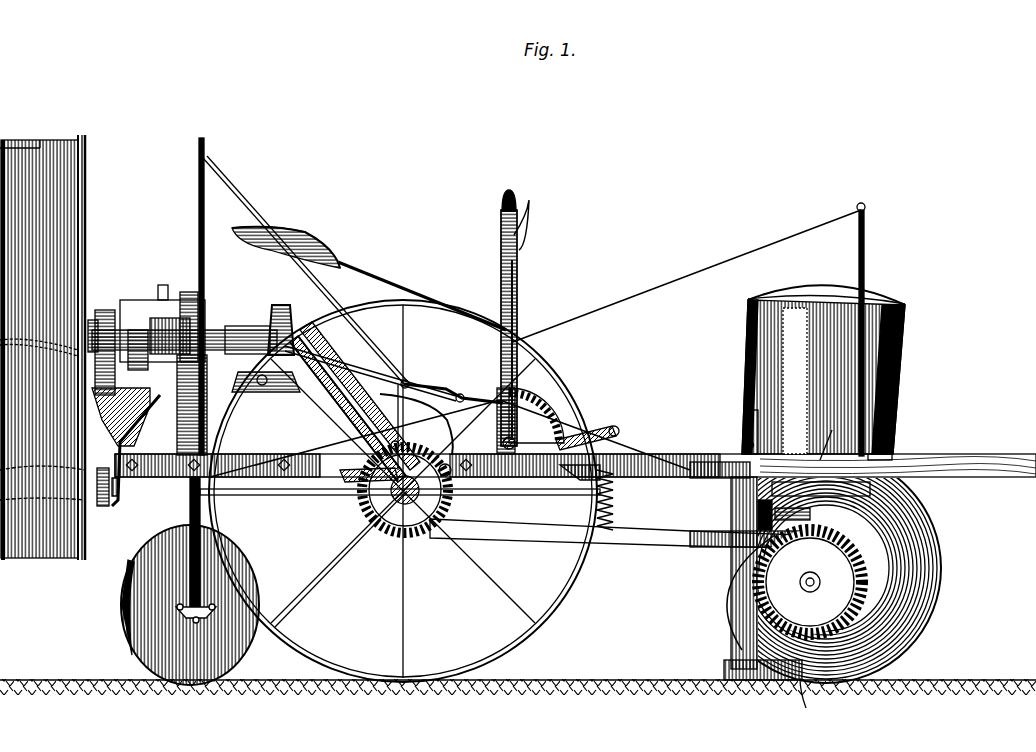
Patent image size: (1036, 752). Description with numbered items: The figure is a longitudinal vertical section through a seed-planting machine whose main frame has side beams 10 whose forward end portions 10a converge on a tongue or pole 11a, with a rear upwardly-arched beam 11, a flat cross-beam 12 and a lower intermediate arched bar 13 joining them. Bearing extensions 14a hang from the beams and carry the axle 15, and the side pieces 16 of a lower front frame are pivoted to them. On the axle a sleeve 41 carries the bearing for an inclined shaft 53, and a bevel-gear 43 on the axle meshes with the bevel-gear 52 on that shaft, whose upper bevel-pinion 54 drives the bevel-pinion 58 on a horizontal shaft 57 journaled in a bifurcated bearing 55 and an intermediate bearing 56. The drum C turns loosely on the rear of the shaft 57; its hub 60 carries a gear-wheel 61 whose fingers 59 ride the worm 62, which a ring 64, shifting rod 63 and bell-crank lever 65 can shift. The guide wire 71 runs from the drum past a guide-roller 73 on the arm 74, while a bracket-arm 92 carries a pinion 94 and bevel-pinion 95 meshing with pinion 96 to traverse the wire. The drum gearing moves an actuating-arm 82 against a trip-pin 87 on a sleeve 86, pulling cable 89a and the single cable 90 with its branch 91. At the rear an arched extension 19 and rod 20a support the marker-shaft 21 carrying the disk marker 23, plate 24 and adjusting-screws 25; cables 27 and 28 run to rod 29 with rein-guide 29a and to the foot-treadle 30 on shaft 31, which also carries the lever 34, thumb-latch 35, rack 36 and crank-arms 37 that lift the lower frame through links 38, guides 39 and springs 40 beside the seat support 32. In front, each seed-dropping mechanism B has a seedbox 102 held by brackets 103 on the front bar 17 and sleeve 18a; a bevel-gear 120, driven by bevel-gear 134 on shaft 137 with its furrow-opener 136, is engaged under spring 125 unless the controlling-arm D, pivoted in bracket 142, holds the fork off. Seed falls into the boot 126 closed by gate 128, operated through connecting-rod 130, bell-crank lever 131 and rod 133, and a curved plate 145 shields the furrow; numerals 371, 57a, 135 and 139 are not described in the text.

The guide wire 71 is at (62, 150).
The drum C is at (88, 262).
The guide-roller 73 is at (72, 346).
The bevel-pinion 95 is at (88, 472).
The pinion 96 is at (86, 500).
The rod 20a is at (199, 240).
The rope, chain, or cable 28 is at (330, 300).
The support for the driver's seat 32 is at (422, 298).
The lever 34 is at (501, 278).
The thumb-latch 35 is at (537, 350).
The shaft 31 is at (523, 434).
The rack 36 is at (540, 412).
The crank-arm 37 is at (592, 428).
The rope, chain, or cable 27 is at (624, 300).
The bearing extension 14a is at (386, 522).
The wheel rim 371 is at (500, 616).
The side beam 10 is at (250, 455).
The intermediate arched bar 13 is at (280, 455).
The tongue or pole 11a is at (985, 455).
The forward end portion of side beam 10a is at (722, 455).
The flat cross-beam 12 is at (518, 490).
The guide 39 is at (580, 480).
The link 38 is at (614, 488).
The spring 40 is at (600, 540).
The side piece of forward lower frame 16 is at (645, 534).
The bevel-gear 43 is at (440, 500).
The sleeve 41 is at (372, 488).
The axle 15 is at (378, 505).
The bevel-gear 52 is at (355, 476).
The bell-crank lever 65 is at (443, 463).
The pin 57a is at (395, 440).
The shaft 53 is at (372, 416).
The bevel-pinion 54 is at (310, 352).
The shifting rod 63 is at (356, 396).
The foot-treadle 30 is at (437, 386).
The wire, rope, chain, or cable 90 is at (490, 398).
The branch wire, rope, chain, or cable 91 is at (740, 490).
The ring 64 is at (238, 328).
The cord, rope, chain, or cable 89a is at (248, 332).
The bevel-pinion 58 is at (287, 322).
The horizontal shaft 57 is at (162, 331).
The intermediate bearing 56 is at (150, 345).
The finger 59 is at (110, 385).
The hub 60 is at (93, 322).
The gear-wheel 61 is at (118, 300).
The actuating-arm 82 is at (136, 302).
The trip-pin 87 is at (160, 285).
The sleeve 86 is at (191, 315).
The arched extension 19 is at (204, 292).
The marker-shaft 21 is at (210, 312).
The upwardly-arched beam 11 is at (204, 404).
The worm 62 is at (138, 420).
The arm 74 is at (116, 446).
The bifurcated bearing 55 is at (266, 393).
The pinion 94 is at (104, 508).
The bracket-arm 92 is at (118, 490).
The disk marker 23 is at (122, 592).
The plate 24 is at (182, 612).
The adjusting-screw 25 is at (196, 624).
The seed-dropping mechanism B is at (893, 392).
The seedbox 102 is at (810, 381).
The rod 29 is at (866, 286).
The rein-guide 29a is at (859, 250).
The bracket 103 is at (764, 448).
The spring 125 is at (843, 456).
The horizontal bracket 142 is at (886, 454).
The controlling-arm D is at (890, 500).
The furrow-opener 136 is at (930, 564).
The front bar 17 is at (826, 566).
The sleeve 18a is at (828, 578).
The shaft 137 is at (812, 592).
The pin 135 is at (800, 582).
The connecting-rod 130 is at (800, 612).
The bevel-gear 134 is at (826, 620).
The rod 133 is at (792, 507).
The bevel-gear 120 is at (758, 515).
The bell-crank lever 131 is at (735, 508).
The boot or drill conductor 126 is at (733, 622).
The cam 139 is at (758, 566).
The gate 128 is at (748, 682).
The plate 145 is at (806, 700).